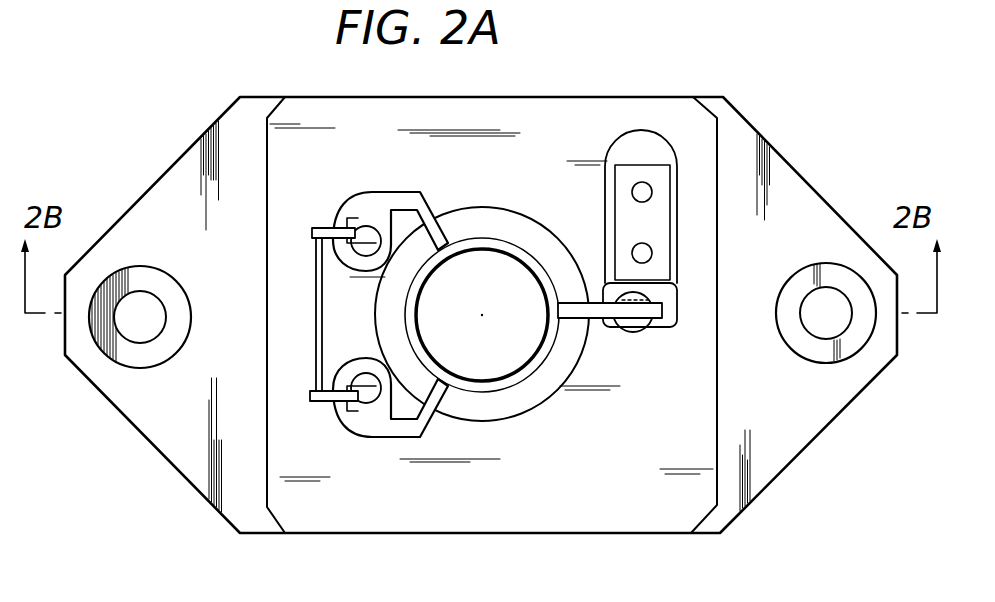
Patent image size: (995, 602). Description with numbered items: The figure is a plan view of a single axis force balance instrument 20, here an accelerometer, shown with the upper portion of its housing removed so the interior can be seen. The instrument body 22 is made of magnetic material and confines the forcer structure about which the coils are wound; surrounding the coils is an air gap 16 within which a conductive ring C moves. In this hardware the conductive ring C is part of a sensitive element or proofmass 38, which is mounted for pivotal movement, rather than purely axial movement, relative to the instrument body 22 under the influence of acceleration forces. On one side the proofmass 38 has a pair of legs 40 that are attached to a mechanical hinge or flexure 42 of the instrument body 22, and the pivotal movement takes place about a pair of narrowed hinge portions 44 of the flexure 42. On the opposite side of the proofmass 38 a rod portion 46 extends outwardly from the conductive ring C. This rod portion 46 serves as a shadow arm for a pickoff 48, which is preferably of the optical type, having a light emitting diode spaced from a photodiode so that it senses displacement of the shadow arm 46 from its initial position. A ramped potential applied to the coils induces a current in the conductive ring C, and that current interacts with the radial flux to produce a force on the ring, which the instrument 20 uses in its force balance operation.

The single axis force balance instrument 20 is at (703, 84).
The instrument body 22 is at (517, 96).
The air gap 16 is at (512, 400).
The proofmass 38 is at (477, 238).
The legs 40 is at (400, 206).
The flexure 42 is at (318, 273).
The narrowed hinge portions 44 is at (345, 231).
The rod portion 46 is at (593, 319).
The pickoff 48 is at (667, 296).
The conductive ring C is at (507, 247).